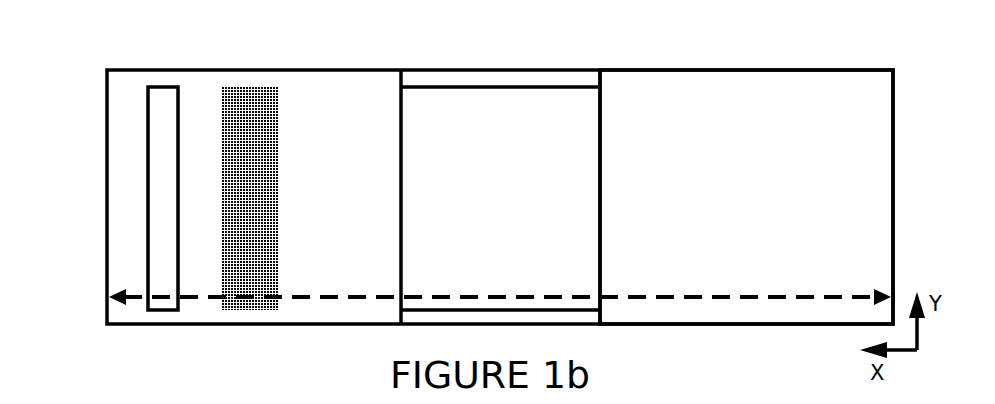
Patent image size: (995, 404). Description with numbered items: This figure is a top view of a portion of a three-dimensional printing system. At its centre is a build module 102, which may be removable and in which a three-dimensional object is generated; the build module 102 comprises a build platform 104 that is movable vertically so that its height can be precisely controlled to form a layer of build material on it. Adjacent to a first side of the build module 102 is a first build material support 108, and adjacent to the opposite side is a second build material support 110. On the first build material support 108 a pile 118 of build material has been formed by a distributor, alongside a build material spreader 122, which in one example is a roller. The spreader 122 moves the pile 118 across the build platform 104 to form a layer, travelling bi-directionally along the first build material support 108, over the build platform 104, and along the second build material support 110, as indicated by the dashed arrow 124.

The build module 102 is at (433, 78).
The build platform 104 is at (548, 112).
The first build material support 108 is at (123, 101).
The second build material support 110 is at (799, 79).
The pile of build material 118 is at (264, 100).
The build material spreader 122 is at (166, 100).
The arrow 124 is at (834, 295).